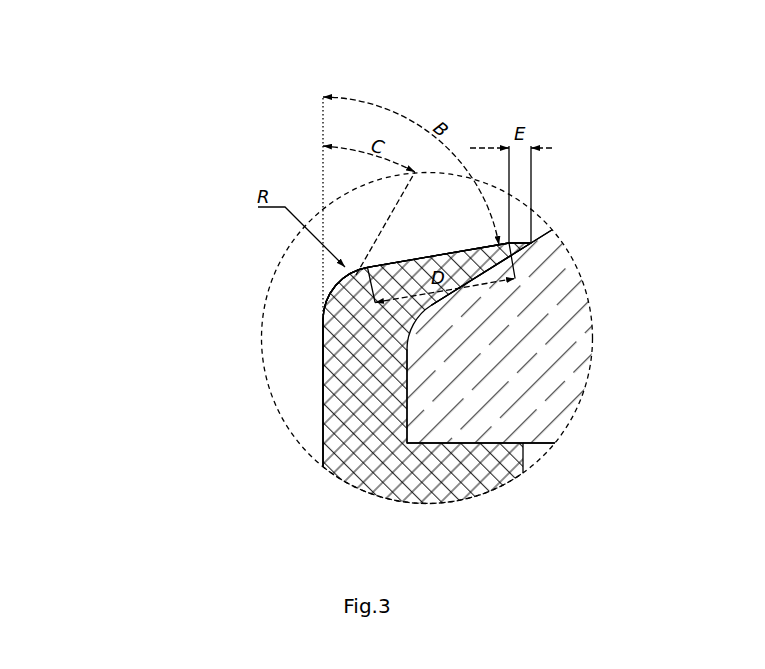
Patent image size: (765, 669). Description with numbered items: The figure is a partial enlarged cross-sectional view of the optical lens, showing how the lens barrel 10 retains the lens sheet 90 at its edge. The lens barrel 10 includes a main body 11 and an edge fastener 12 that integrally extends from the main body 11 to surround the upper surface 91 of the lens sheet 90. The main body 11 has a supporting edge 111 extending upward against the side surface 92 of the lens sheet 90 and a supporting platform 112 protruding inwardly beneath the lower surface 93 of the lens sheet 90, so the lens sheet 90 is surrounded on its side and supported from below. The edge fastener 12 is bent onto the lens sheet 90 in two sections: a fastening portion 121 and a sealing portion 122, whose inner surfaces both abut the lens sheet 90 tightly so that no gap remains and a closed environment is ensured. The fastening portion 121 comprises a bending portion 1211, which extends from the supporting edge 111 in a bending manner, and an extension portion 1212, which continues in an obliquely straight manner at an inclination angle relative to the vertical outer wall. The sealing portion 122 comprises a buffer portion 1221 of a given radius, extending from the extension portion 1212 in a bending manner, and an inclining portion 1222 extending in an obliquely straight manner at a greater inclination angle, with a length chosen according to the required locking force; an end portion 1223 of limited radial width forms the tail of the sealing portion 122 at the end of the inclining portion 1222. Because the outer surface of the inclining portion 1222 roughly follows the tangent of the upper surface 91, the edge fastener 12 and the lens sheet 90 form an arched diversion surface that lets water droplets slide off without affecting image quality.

The lens barrel 10 is at (153, 345).
The main body 11 is at (268, 495).
The supporting edge 111 is at (321, 390).
The supporting platform 112 is at (397, 503).
The edge fastener 12 is at (261, 103).
The fastening portion 121 is at (222, 263).
The bending portion 1211 is at (322, 322).
The extension portion 1212 is at (334, 287).
The sealing portion 122 is at (405, 88).
The buffer portion 1221 is at (364, 268).
The inclining portion 1222 is at (372, 268).
The end portion 1223 is at (497, 238).
The lens sheet 90 is at (419, 443).
The upper surface 91 is at (548, 232).
The side surface 92 is at (412, 400).
The lower surface 93 is at (553, 456).